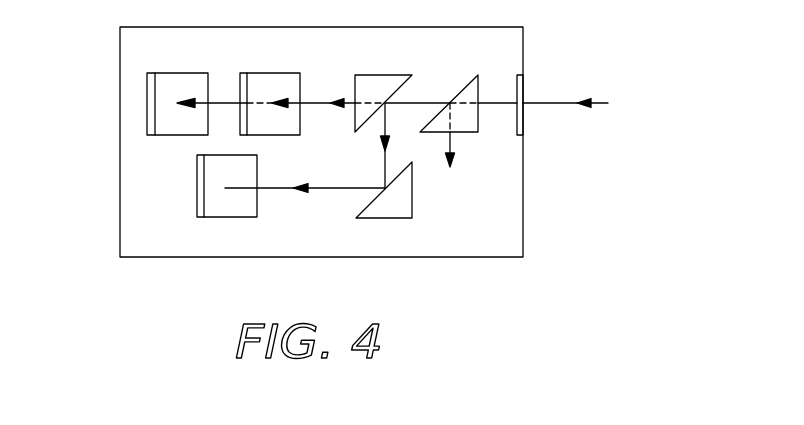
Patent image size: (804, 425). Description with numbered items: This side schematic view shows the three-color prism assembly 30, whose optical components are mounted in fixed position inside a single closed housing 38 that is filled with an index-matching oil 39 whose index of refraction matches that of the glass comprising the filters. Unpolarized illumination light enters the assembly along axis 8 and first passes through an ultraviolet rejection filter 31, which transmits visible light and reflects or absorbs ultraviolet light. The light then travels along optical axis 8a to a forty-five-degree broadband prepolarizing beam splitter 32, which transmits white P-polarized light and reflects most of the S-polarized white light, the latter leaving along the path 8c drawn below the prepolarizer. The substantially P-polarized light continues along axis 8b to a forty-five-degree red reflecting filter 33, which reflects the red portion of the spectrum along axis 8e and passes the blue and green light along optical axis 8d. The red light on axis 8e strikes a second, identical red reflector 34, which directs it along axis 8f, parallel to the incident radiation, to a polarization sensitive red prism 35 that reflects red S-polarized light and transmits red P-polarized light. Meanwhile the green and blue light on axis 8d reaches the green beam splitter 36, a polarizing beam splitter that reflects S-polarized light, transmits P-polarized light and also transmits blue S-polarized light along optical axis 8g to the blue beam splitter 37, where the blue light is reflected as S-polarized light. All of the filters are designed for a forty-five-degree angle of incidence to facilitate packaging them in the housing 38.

The prism assembly 30 is at (307, 142).
The housing 38 is at (119, 72).
The ultraviolet rejection filter 31 is at (523, 82).
The prepolarizing beam splitter 32 is at (480, 75).
The red reflecting filter 33 is at (414, 82).
The red reflector 34 is at (357, 210).
The polarization sensitive red prism 35 is at (197, 208).
The green beam splitter 36 is at (282, 73).
The blue beam splitter 37 is at (176, 73).
The index-matching oil 39 is at (477, 243).
The axis 8 is at (558, 105).
The optical axis 8a is at (500, 105).
The axis 8b is at (430, 104).
The beam portion 8c is at (455, 150).
The optical axis 8d is at (318, 103).
The axis 8e is at (385, 160).
The axis 8f is at (277, 188).
The optical axis 8g is at (219, 102).